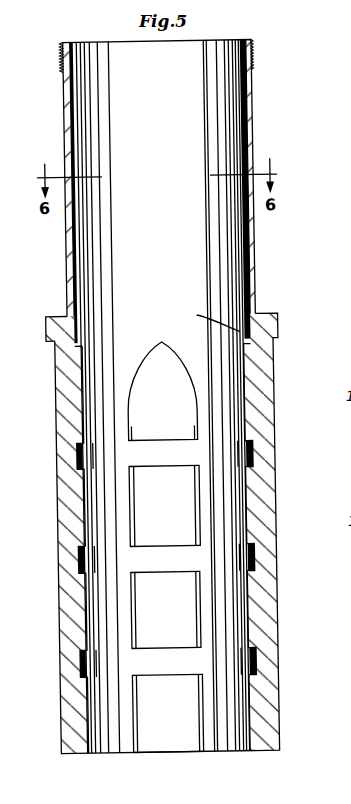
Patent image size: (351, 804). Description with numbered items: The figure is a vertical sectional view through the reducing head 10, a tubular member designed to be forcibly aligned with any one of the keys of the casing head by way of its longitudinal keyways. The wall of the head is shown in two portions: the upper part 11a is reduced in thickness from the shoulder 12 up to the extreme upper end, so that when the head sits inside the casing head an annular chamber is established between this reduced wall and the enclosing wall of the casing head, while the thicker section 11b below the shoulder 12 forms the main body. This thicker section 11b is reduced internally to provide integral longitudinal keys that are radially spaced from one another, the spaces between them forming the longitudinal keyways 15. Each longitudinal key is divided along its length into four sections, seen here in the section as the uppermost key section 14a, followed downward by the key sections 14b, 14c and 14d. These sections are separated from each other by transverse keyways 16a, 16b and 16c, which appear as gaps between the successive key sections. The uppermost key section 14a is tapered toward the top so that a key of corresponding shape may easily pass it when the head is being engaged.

The reducing head 10 is at (55, 568).
The upper part of the wall 11a is at (68, 238).
The thicker section of the wall 11b is at (56, 490).
The shoulder 12 is at (61, 314).
The uppermost key section 14a is at (189, 320).
The key section 14b is at (141, 503).
The key section 14c is at (152, 608).
The key section 14d is at (167, 738).
The longitudinal keyways 15 is at (235, 741).
The transverse keyway 16a is at (251, 458).
The transverse keyway 16b is at (251, 548).
The transverse keyway 16c is at (249, 662).